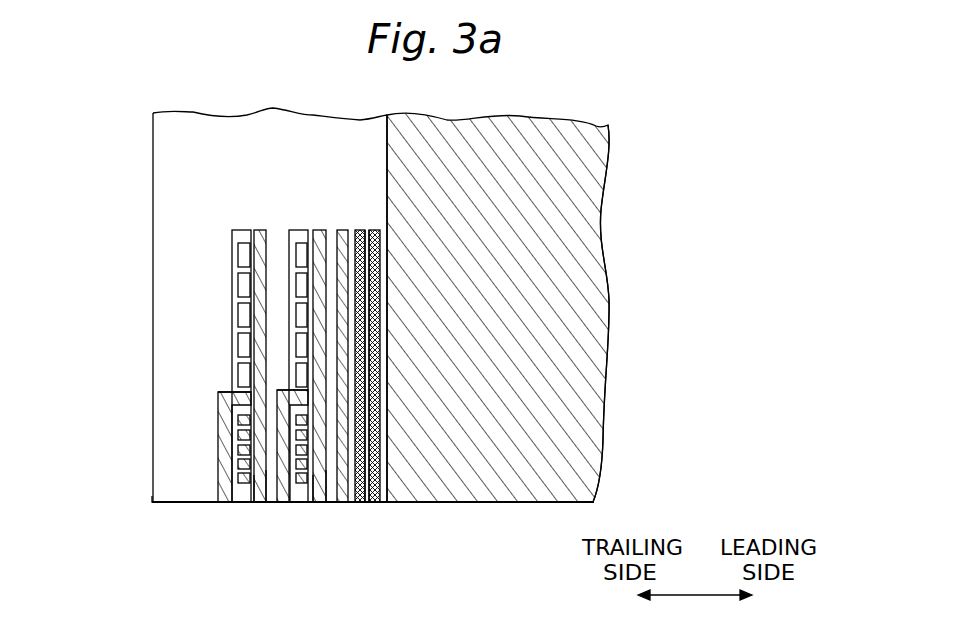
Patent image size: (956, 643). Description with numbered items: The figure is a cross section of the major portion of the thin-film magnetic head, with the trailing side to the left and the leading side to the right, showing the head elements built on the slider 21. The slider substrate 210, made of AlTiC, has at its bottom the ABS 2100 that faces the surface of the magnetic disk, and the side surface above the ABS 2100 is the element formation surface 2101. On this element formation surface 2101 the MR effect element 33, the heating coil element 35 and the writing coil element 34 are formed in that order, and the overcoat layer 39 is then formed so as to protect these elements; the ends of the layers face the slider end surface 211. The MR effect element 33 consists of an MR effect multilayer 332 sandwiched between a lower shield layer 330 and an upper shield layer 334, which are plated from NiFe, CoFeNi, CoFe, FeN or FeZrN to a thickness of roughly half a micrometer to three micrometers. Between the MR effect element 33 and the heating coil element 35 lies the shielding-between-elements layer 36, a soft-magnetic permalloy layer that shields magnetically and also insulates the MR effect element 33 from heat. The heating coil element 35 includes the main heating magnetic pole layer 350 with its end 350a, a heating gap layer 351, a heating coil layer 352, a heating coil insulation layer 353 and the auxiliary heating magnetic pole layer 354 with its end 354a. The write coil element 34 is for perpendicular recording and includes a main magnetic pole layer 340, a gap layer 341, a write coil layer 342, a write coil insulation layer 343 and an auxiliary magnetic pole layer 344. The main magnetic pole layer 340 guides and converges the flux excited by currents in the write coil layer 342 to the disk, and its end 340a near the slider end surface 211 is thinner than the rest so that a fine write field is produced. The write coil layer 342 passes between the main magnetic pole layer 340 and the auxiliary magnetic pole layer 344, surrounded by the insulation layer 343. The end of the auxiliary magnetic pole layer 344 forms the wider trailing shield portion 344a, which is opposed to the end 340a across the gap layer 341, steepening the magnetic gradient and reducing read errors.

The slider substrate 21 is at (491, 296).
The slider substrate 210 is at (557, 298).
The ABS 2100 is at (578, 521).
The element formation surface 2101 is at (385, 141).
The slider end surface 211 is at (158, 503).
The overcoat layer 39 is at (190, 167).
The shielding-between-elements layer 36 is at (341, 232).
The write coil element 34 is at (200, 433).
The main magnetic pole layer 340 is at (261, 533).
The end of the main magnetic pole layer 340a is at (262, 480).
The gap layer 341 is at (250, 498).
The write coil layer 342 is at (258, 475).
The write coil insulation layer 343 is at (230, 472).
The auxiliary magnetic pole layer 344 is at (230, 453).
The trailing shield portion 344a is at (230, 491).
The heating coil element 35 is at (357, 426).
The main heating magnetic pole layer 350 is at (382, 520).
The second main pole end 350a is at (346, 488).
The heating gap layer 351 is at (318, 495).
The heating coil layer 352 is at (320, 485).
The heating coil insulation layer 353 is at (308, 500).
The auxiliary heating magnetic pole layer 354 is at (280, 500).
The second return pole end 354a is at (305, 490).
The MR effect element 33 is at (446, 423).
The lower shield layer 330 is at (375, 490).
The MR effect multilayer 332 is at (368, 503).
The upper shield layer 334 is at (360, 490).